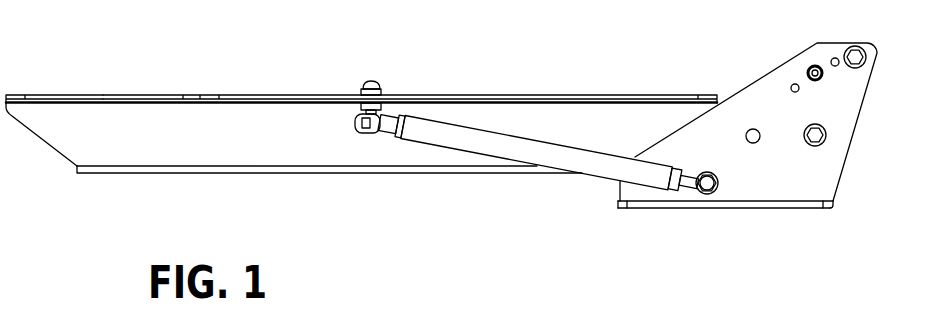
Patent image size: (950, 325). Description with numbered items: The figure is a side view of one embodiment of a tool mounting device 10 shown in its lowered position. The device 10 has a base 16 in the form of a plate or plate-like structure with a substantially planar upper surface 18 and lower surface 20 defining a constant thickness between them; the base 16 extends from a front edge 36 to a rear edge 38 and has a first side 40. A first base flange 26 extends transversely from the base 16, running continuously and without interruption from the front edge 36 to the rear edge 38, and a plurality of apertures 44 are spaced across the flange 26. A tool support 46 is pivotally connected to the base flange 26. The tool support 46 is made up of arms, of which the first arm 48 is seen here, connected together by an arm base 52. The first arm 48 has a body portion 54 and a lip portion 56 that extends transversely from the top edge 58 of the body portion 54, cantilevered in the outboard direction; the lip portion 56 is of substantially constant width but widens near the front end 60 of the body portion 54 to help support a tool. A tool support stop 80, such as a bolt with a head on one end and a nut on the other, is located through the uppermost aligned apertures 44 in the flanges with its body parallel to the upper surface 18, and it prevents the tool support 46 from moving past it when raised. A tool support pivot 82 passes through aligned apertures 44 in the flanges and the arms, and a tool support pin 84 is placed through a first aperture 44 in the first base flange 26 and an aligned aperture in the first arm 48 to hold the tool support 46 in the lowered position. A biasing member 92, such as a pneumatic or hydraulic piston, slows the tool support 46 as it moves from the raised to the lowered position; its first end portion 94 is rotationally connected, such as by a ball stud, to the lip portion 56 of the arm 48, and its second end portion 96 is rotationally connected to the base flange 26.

The tool mounting device 10 is at (660, 83).
The base 16 is at (655, 208).
The upper surface 18 is at (812, 201).
The lower surface 20 is at (785, 209).
The first base flange 26 is at (852, 104).
The front edge 36 is at (619, 204).
The rear edge 38 is at (835, 211).
The first side 40 is at (712, 206).
The apertures 44 is at (820, 65).
The tool support 46 is at (372, 73).
The first arm 48 is at (163, 95).
The arm base 52 is at (337, 175).
The body portion 54 is at (200, 156).
The lip portion 56 is at (52, 94).
The top edge 58 is at (244, 103).
The front end 60 is at (35, 112).
The tool support stop 80 is at (857, 50).
The tool support pivot 82 is at (826, 133).
The tool support pin 84 is at (808, 70).
The biasing member 92 is at (470, 152).
The first end portion 94 is at (396, 104).
The second end portion 96 is at (598, 142).